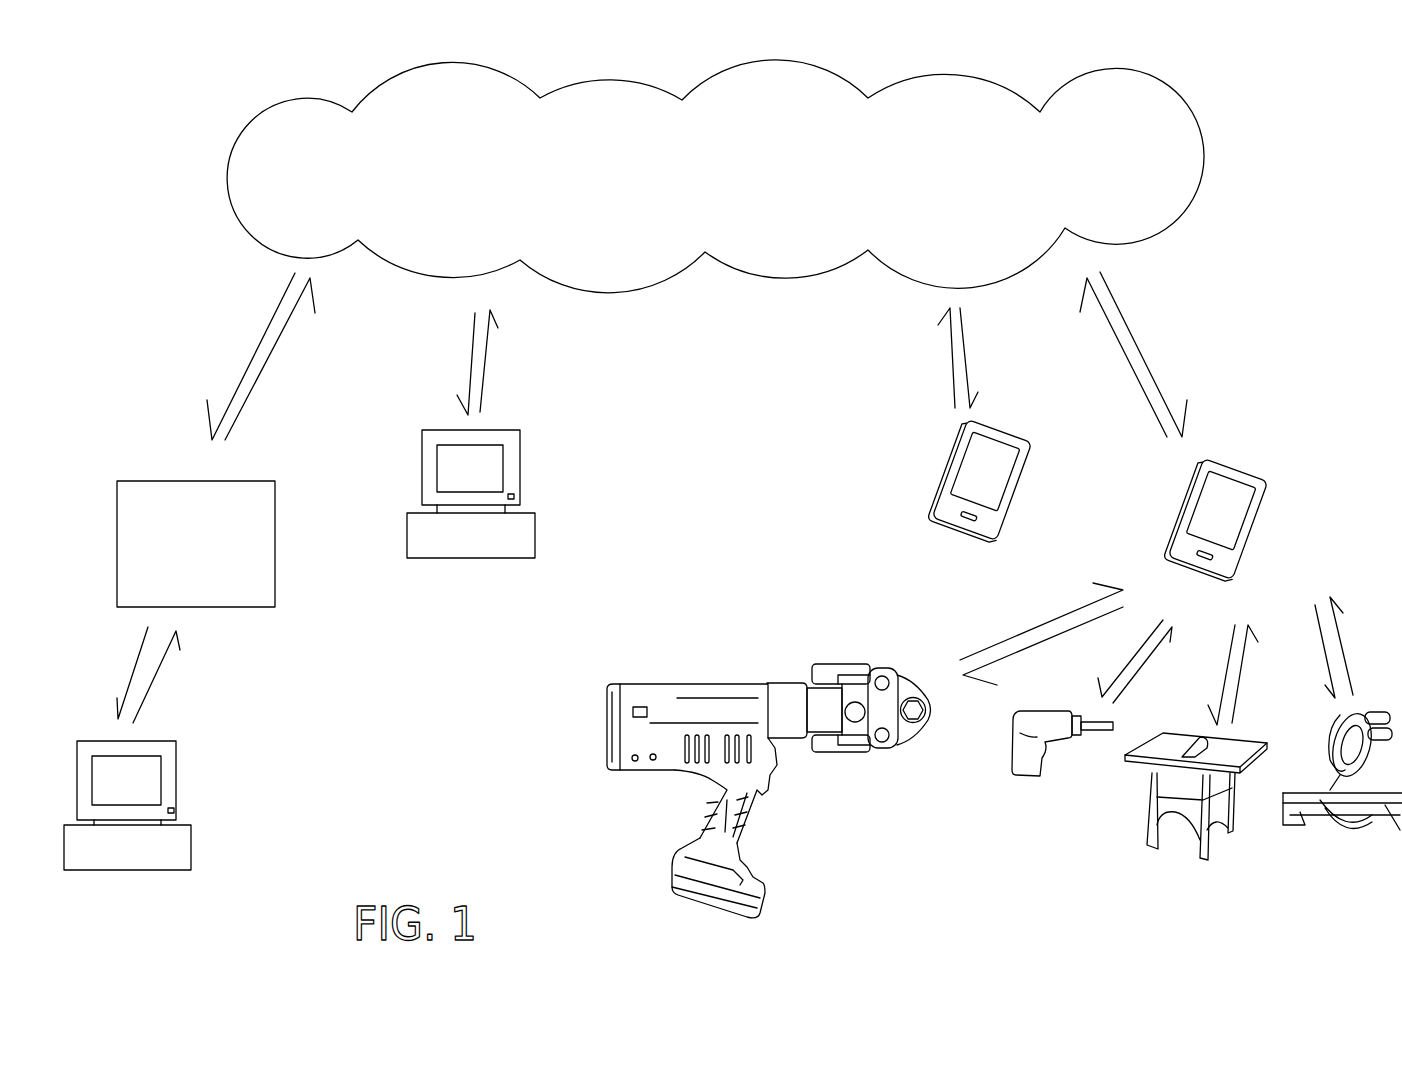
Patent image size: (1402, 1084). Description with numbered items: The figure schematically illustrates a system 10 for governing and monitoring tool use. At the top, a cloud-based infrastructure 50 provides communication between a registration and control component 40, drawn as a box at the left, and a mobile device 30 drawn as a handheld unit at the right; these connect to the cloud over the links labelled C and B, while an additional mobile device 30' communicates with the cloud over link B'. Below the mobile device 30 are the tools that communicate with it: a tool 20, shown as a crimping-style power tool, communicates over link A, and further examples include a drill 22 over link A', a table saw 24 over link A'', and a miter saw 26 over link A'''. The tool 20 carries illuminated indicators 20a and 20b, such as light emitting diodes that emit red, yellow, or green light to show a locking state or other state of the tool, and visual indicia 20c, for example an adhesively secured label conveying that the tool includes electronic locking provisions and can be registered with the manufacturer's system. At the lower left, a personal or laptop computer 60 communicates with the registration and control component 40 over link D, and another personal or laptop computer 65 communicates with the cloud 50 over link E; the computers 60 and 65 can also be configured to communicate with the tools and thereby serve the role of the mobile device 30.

The system 10 is at (127, 150).
The tool 20 is at (662, 692).
The illuminated indicator 20a is at (637, 773).
The illuminated indicator 20b is at (653, 763).
The visual indicia 20c is at (633, 712).
The drill 22 is at (1028, 780).
The table saw 24 is at (1148, 853).
The miter saw 26 is at (1355, 833).
The mobile device 30 is at (1225, 496).
The additional mobile device 30' is at (992, 452).
The registration and control component 40 is at (128, 526).
The cloud-based infrastructure 50 is at (1157, 128).
The personal computer or laptop computer 60 is at (178, 783).
The personal computer or laptop computer 65 is at (521, 476).